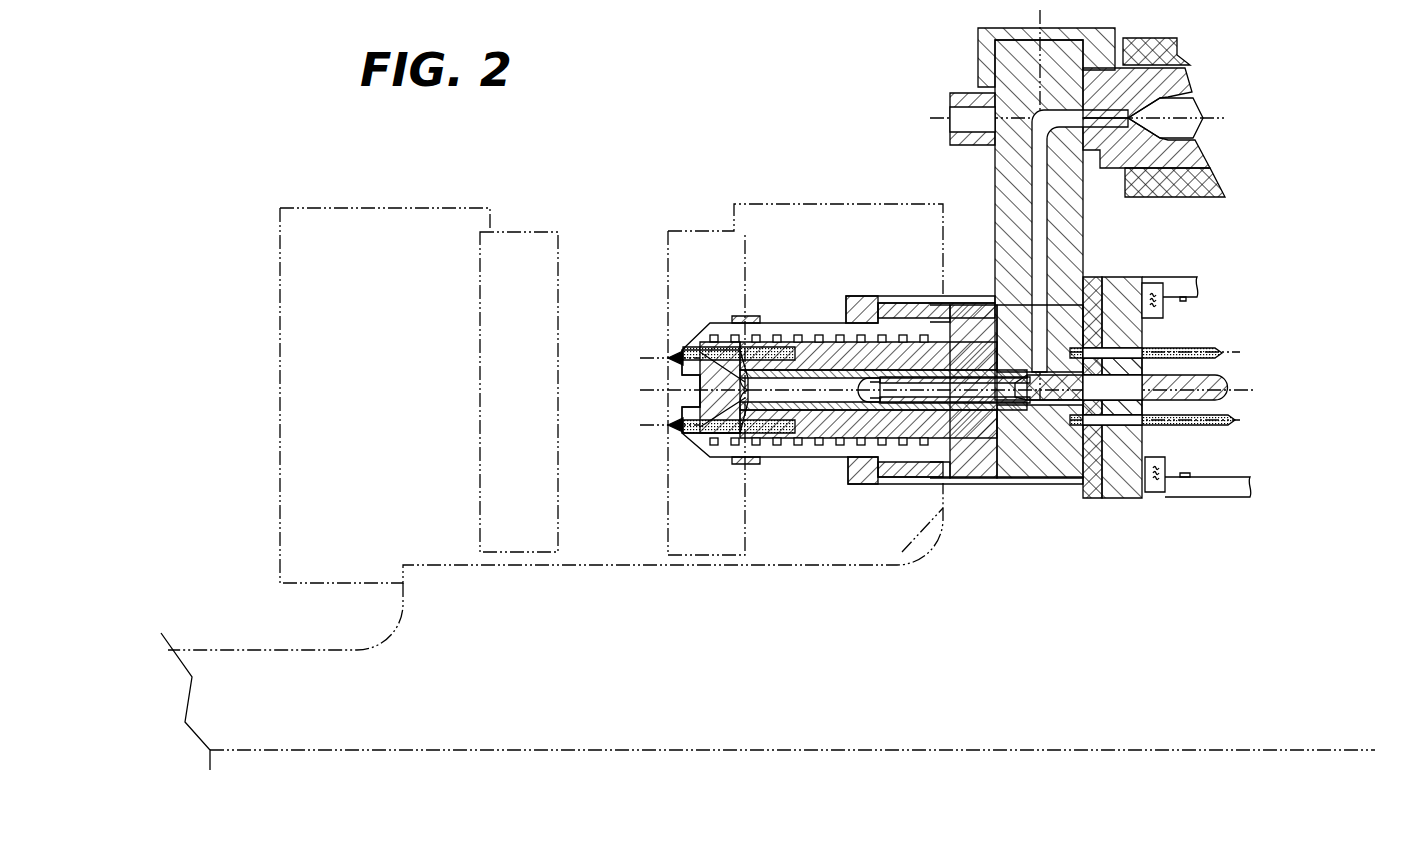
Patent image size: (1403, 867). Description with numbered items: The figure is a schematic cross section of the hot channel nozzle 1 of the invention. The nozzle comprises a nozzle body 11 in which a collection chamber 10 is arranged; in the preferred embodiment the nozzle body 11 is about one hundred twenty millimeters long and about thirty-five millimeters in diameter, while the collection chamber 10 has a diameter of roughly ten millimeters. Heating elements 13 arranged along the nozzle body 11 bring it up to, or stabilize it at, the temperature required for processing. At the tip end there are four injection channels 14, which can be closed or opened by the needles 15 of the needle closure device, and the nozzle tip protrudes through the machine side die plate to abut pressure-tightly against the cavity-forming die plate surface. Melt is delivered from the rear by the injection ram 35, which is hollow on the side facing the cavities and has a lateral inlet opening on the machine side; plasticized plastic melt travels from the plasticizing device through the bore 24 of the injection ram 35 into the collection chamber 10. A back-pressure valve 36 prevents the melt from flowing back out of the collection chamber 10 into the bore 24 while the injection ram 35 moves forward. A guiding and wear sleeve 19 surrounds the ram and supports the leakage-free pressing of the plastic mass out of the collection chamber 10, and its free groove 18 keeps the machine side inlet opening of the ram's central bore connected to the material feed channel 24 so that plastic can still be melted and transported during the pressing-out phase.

The hot channel nozzle 1 is at (873, 283).
The collection chamber 10 is at (798, 436).
The nozzle body 11 is at (972, 318).
The heating elements 13 is at (812, 325).
The injection channels 14 is at (713, 360).
The needles 15 is at (722, 433).
The free groove 18 is at (860, 483).
The guiding and wear sleeve 19 is at (990, 410).
The bore of the injection ram / material feed channel 24 is at (1042, 257).
The injection ram 35 is at (1192, 377).
The back-pressure valve 36 is at (878, 403).